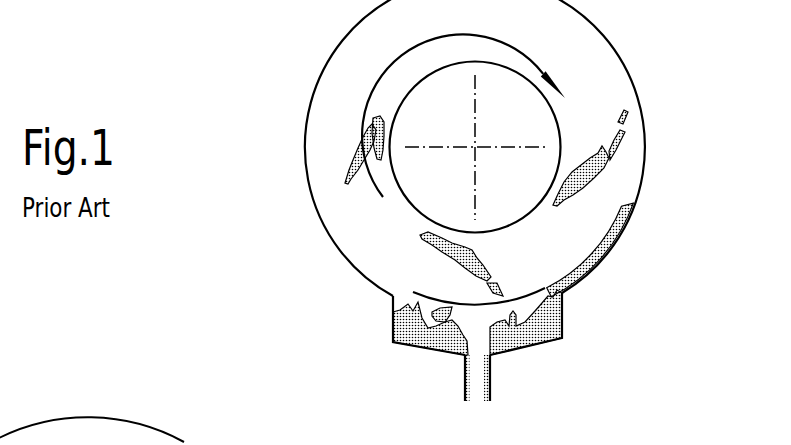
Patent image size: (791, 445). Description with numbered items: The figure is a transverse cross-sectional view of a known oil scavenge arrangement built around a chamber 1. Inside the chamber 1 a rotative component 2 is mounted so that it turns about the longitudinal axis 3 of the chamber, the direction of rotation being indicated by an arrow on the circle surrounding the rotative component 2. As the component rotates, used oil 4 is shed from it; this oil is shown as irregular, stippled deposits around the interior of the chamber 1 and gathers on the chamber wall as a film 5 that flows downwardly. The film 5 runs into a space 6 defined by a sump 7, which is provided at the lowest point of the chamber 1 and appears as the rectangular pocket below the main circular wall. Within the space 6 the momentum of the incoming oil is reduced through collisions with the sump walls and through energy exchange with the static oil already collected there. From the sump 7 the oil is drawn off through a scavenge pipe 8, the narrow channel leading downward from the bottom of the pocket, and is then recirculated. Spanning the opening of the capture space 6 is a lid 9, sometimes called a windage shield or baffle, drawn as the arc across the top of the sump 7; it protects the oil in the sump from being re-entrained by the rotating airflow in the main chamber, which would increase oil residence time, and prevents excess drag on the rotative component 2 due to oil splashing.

The chamber 1 is at (314, 65).
The rotative component 2 is at (537, 125).
The longitudinal axis 3 is at (476, 149).
The used oil 4 is at (610, 151).
The film 5 is at (605, 253).
The space 6 is at (513, 340).
The sump 7 is at (393, 320).
The scavenge pipe 8 is at (465, 386).
The lid 9 is at (446, 297).